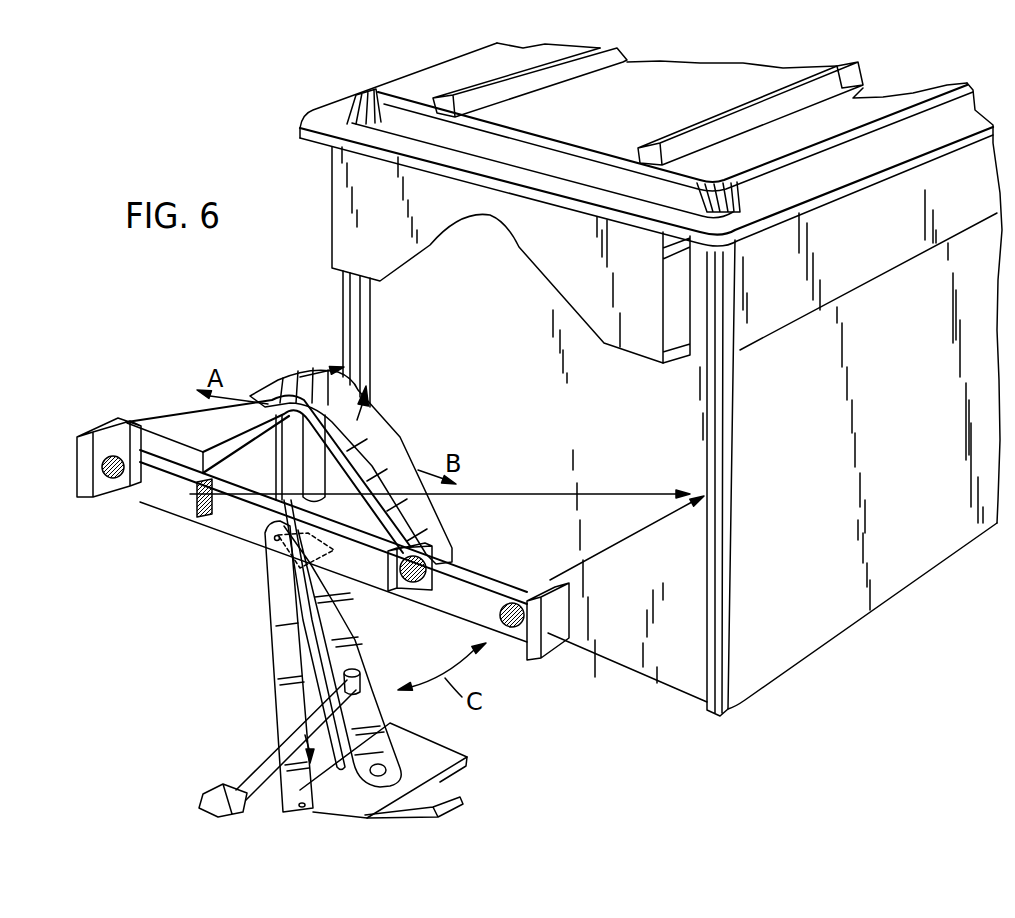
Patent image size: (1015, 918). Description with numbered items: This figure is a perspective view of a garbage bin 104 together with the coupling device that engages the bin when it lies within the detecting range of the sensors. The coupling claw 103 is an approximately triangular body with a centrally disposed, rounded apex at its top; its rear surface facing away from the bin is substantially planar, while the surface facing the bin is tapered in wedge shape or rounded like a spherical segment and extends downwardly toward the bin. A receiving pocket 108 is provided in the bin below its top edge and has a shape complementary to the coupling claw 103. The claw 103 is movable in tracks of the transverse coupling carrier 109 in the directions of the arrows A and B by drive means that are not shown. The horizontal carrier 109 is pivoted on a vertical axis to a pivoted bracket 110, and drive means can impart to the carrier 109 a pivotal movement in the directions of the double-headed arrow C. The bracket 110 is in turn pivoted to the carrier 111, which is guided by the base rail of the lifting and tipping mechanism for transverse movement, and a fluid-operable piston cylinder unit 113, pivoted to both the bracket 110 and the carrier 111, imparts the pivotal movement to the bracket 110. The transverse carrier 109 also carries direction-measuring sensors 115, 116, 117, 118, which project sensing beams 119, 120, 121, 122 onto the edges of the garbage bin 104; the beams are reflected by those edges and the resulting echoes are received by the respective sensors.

The garbage bin 104 is at (390, 92).
The receiving pocket 108 is at (488, 269).
The sensing beam 121 is at (194, 427).
The coupling claw 103 is at (365, 440).
The sensing beam 122 is at (362, 438).
The transverse coupling carrier 109 is at (507, 575).
The direction-measuring sensor 118 is at (112, 482).
The direction-measuring sensor 117 is at (190, 508).
The direction-measuring sensor 116 is at (422, 573).
The direction-measuring sensor 115 is at (512, 632).
The sensing beam 120 is at (518, 494).
The sensing beam 119 is at (623, 540).
The pivoted bracket 110 is at (366, 637).
The fluid-operable piston cylinder unit 113 is at (255, 787).
The carrier 111 is at (453, 748).